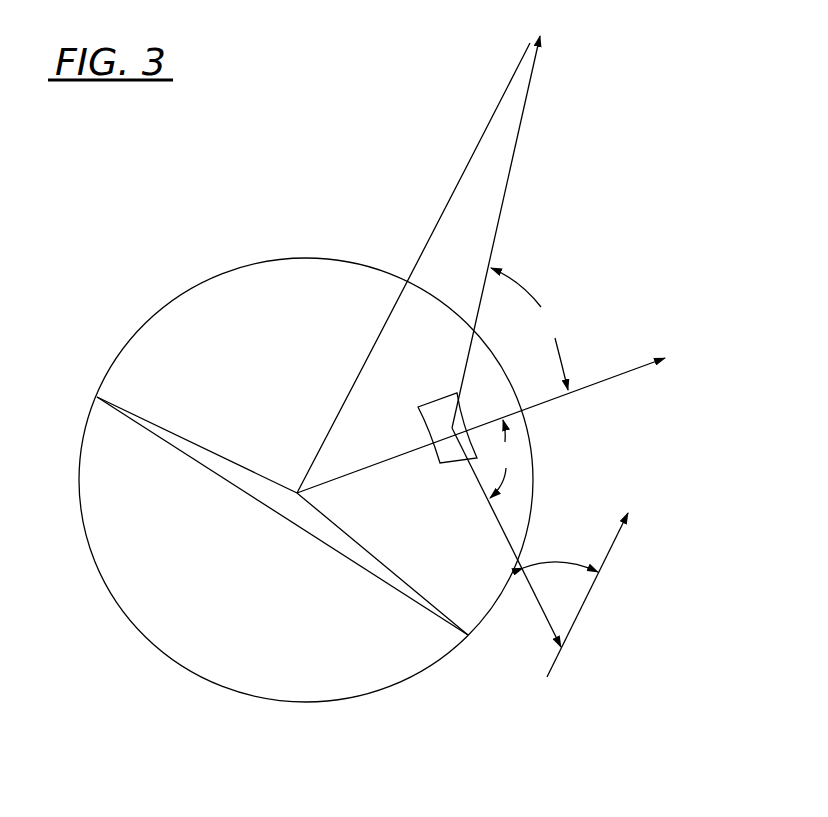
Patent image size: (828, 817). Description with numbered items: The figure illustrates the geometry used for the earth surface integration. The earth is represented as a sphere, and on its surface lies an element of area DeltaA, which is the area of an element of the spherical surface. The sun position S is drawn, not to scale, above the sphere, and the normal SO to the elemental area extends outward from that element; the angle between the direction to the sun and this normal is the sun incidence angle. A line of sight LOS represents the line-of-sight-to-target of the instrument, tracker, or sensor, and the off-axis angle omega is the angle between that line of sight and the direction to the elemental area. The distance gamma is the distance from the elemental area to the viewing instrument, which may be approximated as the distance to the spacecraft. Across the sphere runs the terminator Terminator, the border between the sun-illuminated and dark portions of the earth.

The sun position S is at (422, 250).
The normal to the elemental area SO is at (501, 419).
The line-of-sight-to-target LOS is at (614, 582).
The terminator Terminator is at (282, 516).
The area of an element of the surface of a sphere DeltaA is at (441, 442).
The distance from the elemental area to the viewing instrument gamma is at (501, 459).
The off-axis angle omega is at (560, 555).